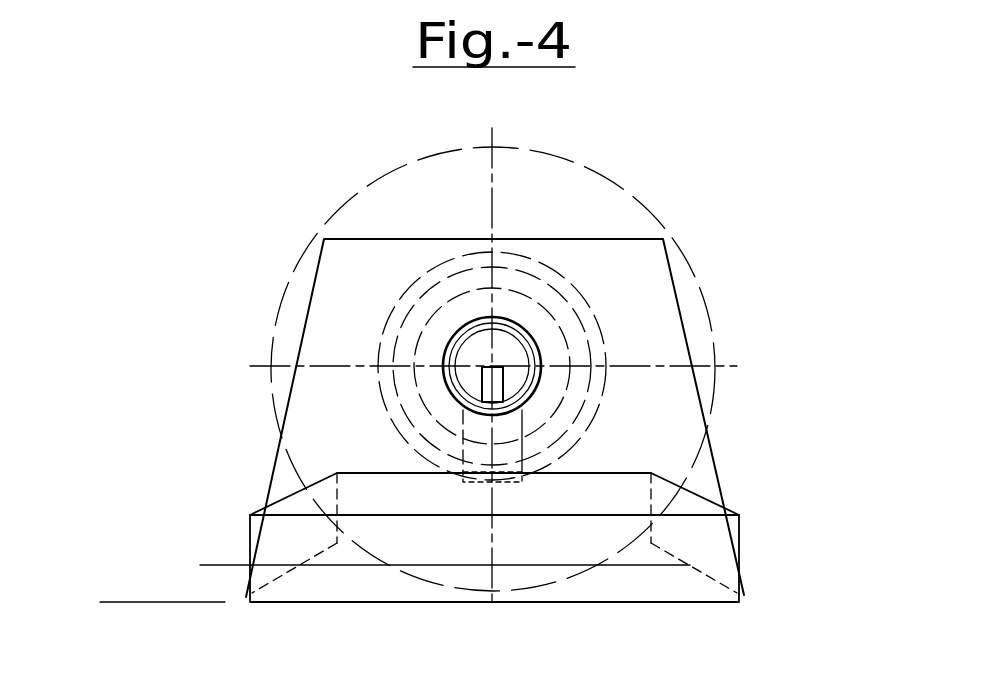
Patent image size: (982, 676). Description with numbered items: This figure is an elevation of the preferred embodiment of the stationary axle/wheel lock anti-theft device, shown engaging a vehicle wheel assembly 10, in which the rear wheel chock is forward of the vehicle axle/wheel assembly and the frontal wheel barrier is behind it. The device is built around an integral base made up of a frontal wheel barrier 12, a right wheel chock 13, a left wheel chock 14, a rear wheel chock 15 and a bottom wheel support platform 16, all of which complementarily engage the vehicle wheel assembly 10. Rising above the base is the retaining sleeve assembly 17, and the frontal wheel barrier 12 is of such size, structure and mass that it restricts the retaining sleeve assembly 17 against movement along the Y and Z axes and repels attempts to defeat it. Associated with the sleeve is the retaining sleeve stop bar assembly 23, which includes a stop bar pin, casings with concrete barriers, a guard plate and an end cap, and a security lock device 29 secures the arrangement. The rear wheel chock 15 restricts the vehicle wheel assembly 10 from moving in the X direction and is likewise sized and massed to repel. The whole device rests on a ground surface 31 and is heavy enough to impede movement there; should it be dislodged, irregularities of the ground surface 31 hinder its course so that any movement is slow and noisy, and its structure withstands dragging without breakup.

The vehicle wheel assembly 10 is at (580, 203).
The frontal wheel barrier 12 is at (673, 282).
The right wheel chock 13 is at (590, 566).
The left wheel chock 14 is at (300, 566).
The rear wheel chock 15 is at (380, 472).
The bottom wheel support platform 16 is at (530, 590).
The retaining sleeve assembly 17 is at (533, 340).
The retaining sleeve stop bar assembly 23 is at (520, 459).
The security lock device 29 is at (503, 380).
The ground surface 31 is at (103, 603).